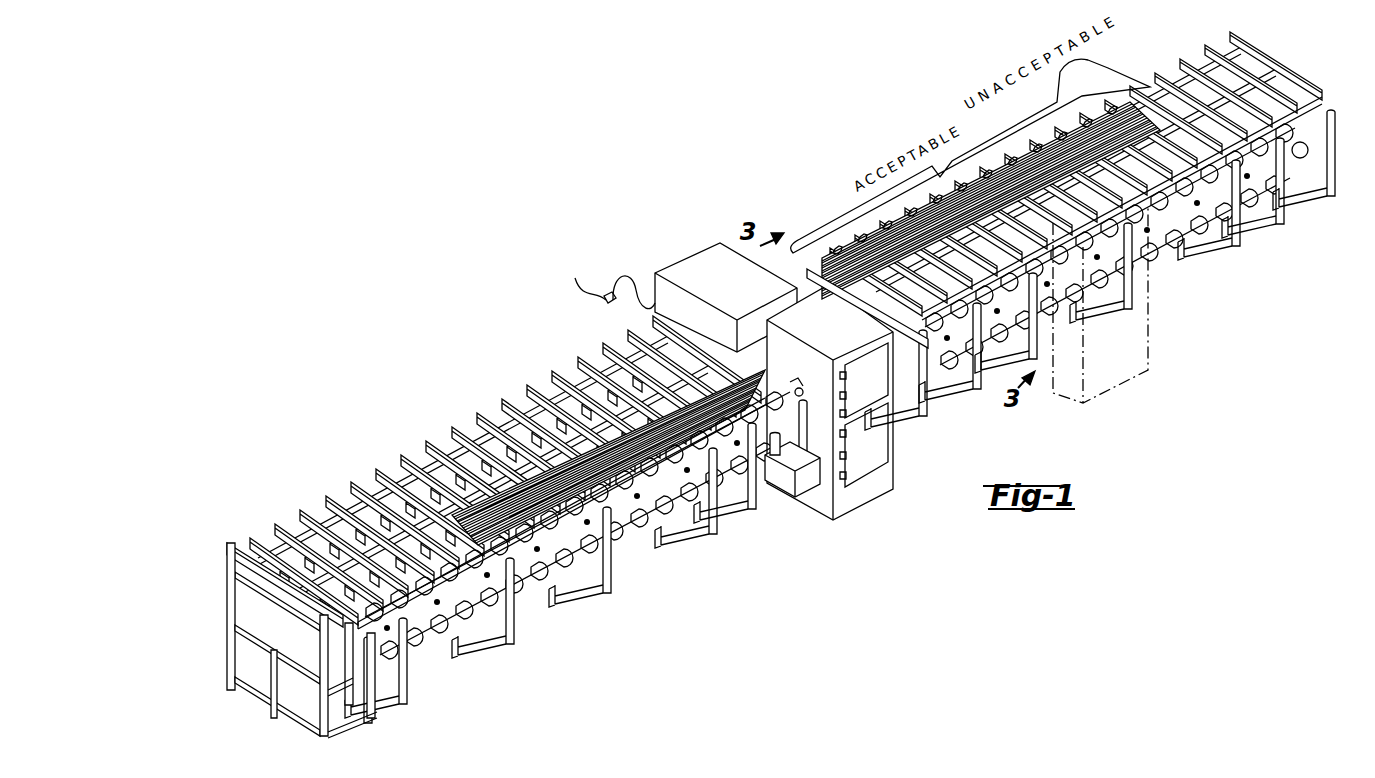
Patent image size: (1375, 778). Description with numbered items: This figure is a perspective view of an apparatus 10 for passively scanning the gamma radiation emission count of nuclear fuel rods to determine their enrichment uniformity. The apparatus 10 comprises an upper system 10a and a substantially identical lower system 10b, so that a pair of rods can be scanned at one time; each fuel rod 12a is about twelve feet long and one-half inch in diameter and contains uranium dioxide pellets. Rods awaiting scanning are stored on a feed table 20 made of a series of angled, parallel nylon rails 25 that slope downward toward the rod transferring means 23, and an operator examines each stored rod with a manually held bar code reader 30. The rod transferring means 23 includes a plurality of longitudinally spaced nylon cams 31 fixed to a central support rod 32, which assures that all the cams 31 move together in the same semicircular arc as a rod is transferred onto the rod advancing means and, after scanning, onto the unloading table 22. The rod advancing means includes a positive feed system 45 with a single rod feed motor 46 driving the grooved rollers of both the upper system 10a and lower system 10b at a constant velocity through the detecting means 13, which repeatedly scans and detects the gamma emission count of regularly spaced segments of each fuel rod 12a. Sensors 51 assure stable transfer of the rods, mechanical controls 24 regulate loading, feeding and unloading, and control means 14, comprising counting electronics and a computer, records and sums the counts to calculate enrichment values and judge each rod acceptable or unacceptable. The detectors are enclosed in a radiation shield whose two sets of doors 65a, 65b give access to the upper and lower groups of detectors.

The apparatus 10 is at (786, 377).
The upper system 10a is at (277, 586).
The lower system 10b is at (290, 636).
The fuel rod 12a is at (522, 488).
The detecting means 13 is at (873, 402).
The control means 14 is at (706, 282).
The feed table 20 is at (532, 381).
The unloading table 22 is at (1003, 163).
The rod transferring means 23 is at (1302, 152).
The mechanical controls 24 is at (1120, 352).
The nylon rails 25 is at (380, 470).
The bar code reader 30 is at (600, 285).
The cams 31 is at (830, 377).
The support rod 32 is at (420, 632).
The positive feed system 45 is at (792, 455).
The rod feed motor 46 is at (776, 480).
The sensors 51 is at (652, 520).
The doors 65a is at (868, 368).
The doors 65b is at (897, 459).